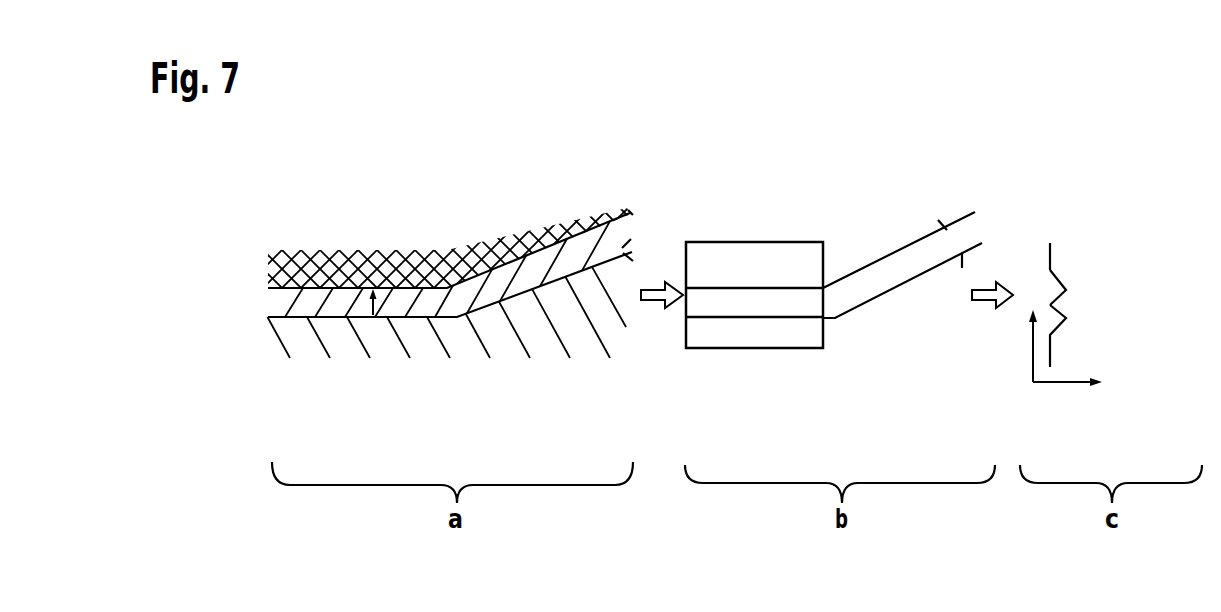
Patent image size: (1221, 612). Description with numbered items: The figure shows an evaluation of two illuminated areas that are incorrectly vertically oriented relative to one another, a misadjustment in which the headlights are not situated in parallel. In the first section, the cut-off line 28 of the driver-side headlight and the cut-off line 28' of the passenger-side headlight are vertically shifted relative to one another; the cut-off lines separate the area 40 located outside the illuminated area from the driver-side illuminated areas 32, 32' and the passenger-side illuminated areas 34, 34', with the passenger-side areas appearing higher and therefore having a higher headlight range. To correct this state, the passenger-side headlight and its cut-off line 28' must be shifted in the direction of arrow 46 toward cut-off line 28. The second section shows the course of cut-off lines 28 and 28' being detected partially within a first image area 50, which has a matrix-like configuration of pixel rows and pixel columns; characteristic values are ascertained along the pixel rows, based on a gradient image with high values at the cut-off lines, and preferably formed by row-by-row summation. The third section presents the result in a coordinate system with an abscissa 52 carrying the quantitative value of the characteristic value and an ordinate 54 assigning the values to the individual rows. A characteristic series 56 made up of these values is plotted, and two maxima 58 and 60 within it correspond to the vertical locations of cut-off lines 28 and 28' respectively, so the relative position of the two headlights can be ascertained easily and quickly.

The cut-off line 28 is at (608, 227).
The cut-off line 28' is at (627, 281).
The driver-side illuminated area 32 is at (362, 403).
The driver-side illuminated area 32' is at (362, 403).
The passenger-side illuminated area 34 is at (543, 402).
The passenger-side illuminated area 34' is at (543, 402).
The area located outside the illuminated area 40 is at (523, 201).
The arrow 46 is at (402, 305).
The first image area 50 is at (748, 253).
The abscissa 52 is at (1050, 382).
The ordinate 54 is at (1032, 355).
The characteristic series 56 is at (1050, 250).
The maximum 58 is at (1090, 285).
The maximum 60 is at (1090, 318).